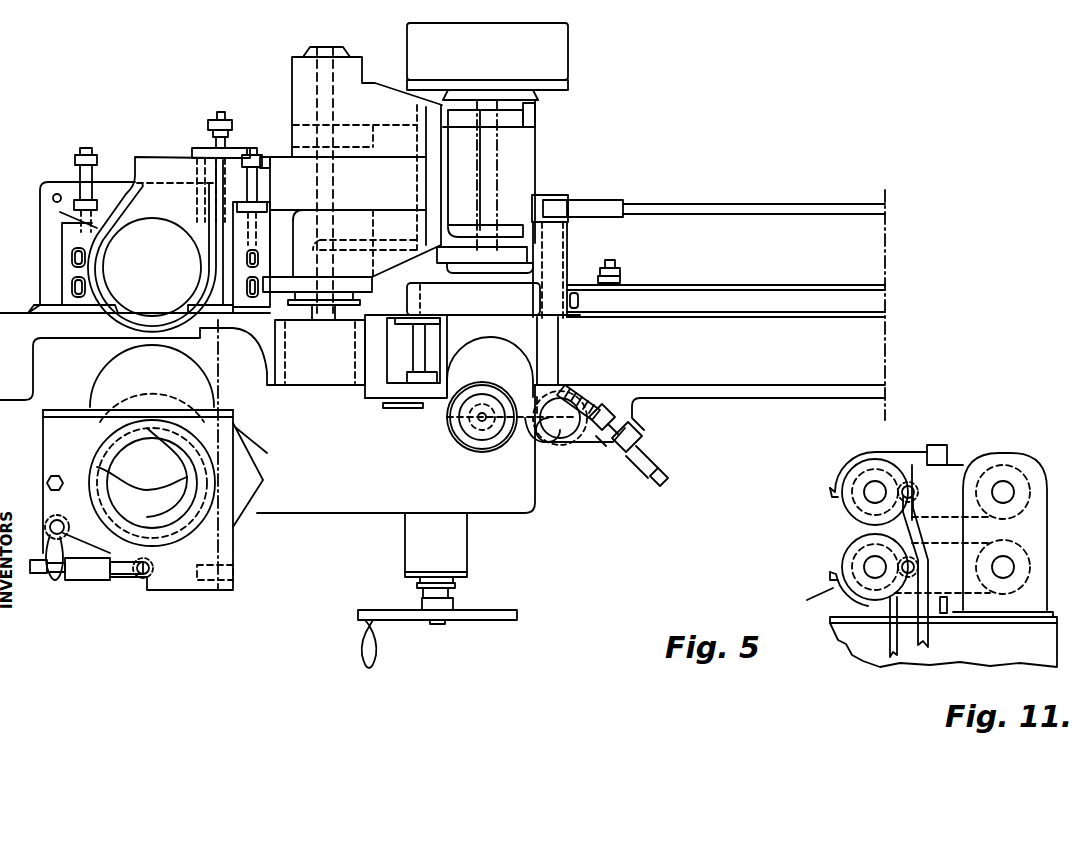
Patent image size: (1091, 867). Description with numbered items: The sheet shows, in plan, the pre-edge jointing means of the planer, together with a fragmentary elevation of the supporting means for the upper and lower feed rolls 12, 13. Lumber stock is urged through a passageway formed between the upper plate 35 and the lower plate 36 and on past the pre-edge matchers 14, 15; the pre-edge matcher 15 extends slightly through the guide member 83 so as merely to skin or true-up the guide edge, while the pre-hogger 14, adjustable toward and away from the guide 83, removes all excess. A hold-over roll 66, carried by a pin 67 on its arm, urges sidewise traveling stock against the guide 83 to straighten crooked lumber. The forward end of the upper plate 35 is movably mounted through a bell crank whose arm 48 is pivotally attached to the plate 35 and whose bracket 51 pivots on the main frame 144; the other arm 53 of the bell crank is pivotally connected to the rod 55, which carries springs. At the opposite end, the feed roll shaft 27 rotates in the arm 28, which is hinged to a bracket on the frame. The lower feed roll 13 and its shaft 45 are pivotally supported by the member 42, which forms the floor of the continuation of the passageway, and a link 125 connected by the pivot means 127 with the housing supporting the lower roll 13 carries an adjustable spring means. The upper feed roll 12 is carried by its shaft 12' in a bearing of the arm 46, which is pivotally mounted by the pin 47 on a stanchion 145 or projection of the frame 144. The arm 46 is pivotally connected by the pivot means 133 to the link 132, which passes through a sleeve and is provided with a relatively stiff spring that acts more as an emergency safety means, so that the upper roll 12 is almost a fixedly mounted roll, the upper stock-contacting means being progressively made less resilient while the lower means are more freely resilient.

In FIG. 5, the upper feed roll 12 is at (451, 366).
In FIG. 11, the upper feed roll 12 is at (857, 494).
In FIG. 5, the shaft of the upper feed roll 12' is at (320, 350).
In FIG. 11, the lower feed roll 13 is at (843, 547).
In FIG. 5, the pre-edge matcher 14 is at (168, 525).
In FIG. 5, the pre-edge matcher 15 is at (147, 225).
In FIG. 11, the shaft 27 is at (863, 492).
In FIG. 5, the arm 28 is at (288, 165).
In FIG. 11, the arm 28 is at (887, 445).
In FIG. 5, the upper plate 35 is at (782, 377).
In FIG. 5, the lower plate 36 is at (833, 393).
In FIG. 5, the member 42 is at (262, 345).
In FIG. 11, the shaft 45 is at (868, 565).
In FIG. 5, the arm 46 is at (303, 243).
In FIG. 5, the pin 47 is at (490, 163).
In FIG. 11, the pin 47 is at (1007, 567).
In FIG. 5, the arm of bell crank 48 is at (460, 314).
In FIG. 5, the bracket 51 is at (563, 252).
In FIG. 5, the arm of bell crank 53 is at (562, 196).
In FIG. 5, the rod 55 is at (793, 210).
In FIG. 5, the hold-over roll 66 is at (479, 452).
In FIG. 5, the pin 67 is at (480, 418).
In FIG. 5, the guide member 83 is at (76, 313).
In FIG. 11, the link 125 is at (893, 623).
In FIG. 11, the pivot means 127 is at (915, 565).
In FIG. 11, the link 132 is at (928, 628).
In FIG. 11, the pivot means 133 is at (914, 490).
In FIG. 11, the main frame 144 is at (950, 655).
In FIG. 5, the stanchion 145 is at (530, 95).
In FIG. 11, the stanchion 145 is at (1012, 460).